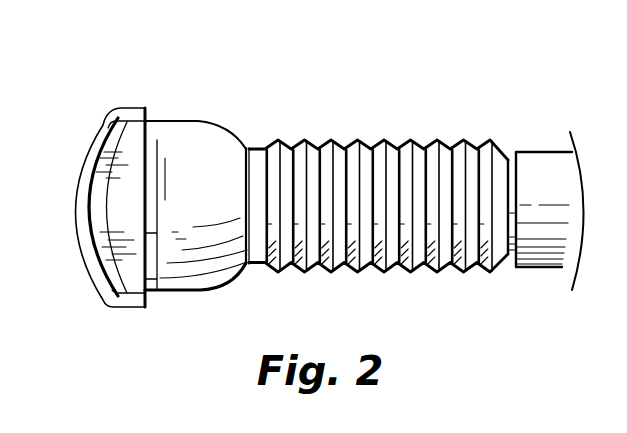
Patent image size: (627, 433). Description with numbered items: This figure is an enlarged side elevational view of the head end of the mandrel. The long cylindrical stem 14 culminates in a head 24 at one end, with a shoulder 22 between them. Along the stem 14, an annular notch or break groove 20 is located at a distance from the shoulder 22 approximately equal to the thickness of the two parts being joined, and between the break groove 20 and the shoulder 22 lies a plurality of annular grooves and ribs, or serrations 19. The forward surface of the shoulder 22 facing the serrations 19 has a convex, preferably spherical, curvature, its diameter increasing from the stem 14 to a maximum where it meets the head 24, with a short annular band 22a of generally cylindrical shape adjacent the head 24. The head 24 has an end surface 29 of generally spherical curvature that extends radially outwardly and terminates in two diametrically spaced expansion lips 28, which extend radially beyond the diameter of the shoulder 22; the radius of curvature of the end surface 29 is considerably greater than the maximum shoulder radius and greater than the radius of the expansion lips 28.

The stem 14 is at (543, 158).
The serrations 19 is at (316, 152).
The break groove 20 is at (509, 262).
The shoulder 22 is at (200, 142).
The annular band 22a is at (140, 150).
The head 24 is at (99, 104).
The expansion lips 28 is at (146, 108).
The end surface 29 is at (79, 257).